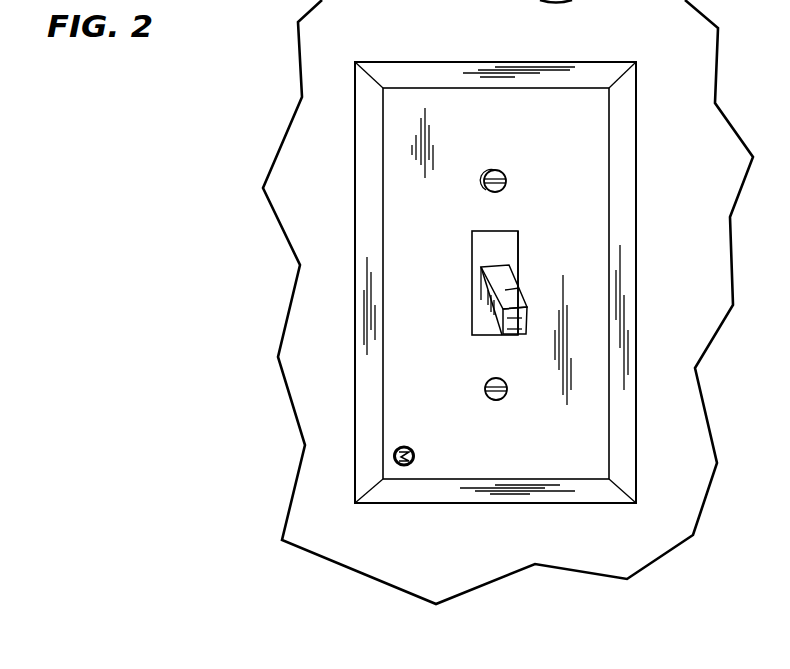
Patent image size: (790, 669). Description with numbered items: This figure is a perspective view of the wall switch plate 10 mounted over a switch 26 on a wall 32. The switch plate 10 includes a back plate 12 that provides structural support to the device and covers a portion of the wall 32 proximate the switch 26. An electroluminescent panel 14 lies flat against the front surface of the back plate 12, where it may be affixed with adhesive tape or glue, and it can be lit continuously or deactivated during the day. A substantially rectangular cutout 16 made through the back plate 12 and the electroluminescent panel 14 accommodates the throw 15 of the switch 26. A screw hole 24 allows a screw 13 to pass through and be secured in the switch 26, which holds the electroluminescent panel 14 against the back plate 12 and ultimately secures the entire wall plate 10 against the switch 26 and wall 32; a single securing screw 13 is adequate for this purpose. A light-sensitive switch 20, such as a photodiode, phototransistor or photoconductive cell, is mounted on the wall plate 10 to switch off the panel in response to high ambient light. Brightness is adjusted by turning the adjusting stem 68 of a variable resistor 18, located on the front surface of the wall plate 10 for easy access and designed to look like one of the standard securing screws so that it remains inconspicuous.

The switch plate 10 is at (508, 254).
The back plate 12 is at (635, 337).
The screw 13 is at (491, 169).
The electroluminescent panel 14 is at (405, 192).
The throw 15 is at (490, 292).
The cutout 16 is at (518, 267).
The variable resistor 18 is at (483, 385).
The light-sensitive switch 20 is at (413, 466).
The screw hole 24 is at (484, 190).
The switch 26 is at (490, 245).
The wall 32 is at (295, 337).
The adjusting stem 68 is at (497, 402).